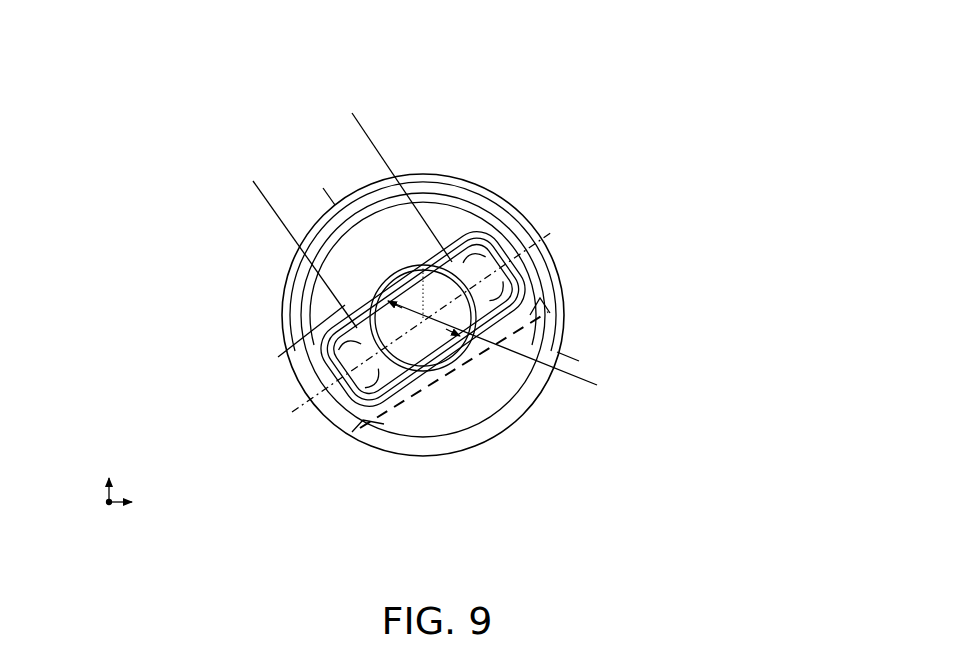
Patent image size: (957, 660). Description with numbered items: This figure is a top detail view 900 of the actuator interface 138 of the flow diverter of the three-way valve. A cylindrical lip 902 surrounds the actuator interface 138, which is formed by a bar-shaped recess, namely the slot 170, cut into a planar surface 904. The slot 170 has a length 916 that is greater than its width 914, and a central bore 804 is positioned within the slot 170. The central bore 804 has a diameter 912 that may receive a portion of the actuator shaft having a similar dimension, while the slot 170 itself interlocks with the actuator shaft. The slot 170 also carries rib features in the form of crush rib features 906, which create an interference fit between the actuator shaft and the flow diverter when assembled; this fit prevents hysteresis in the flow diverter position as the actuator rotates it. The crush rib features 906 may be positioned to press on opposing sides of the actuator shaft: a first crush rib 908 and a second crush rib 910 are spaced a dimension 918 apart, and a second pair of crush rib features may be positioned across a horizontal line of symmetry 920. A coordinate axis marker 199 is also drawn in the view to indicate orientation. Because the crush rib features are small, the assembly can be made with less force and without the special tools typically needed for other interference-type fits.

The top detail view 900 is at (704, 64).
The actuator interface 138 is at (513, 170).
The cylindrical lip 902 is at (520, 237).
The planar surface 904 is at (393, 228).
The first crush rib 908 is at (447, 253).
The second crush rib 910 is at (355, 320).
The slot 170 is at (480, 263).
The width 914 is at (309, 346).
The central bore 804 is at (450, 308).
The diameter 912 is at (513, 350).
The crush rib features 906 is at (307, 343).
The horizontal line of symmetry 920 is at (292, 412).
The length 916 is at (368, 430).
The dimension 918 is at (260, 187).
The coordinate system 199 is at (126, 462).